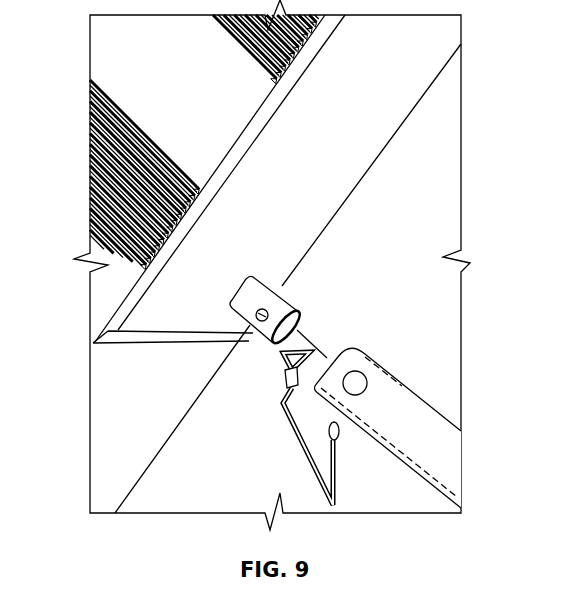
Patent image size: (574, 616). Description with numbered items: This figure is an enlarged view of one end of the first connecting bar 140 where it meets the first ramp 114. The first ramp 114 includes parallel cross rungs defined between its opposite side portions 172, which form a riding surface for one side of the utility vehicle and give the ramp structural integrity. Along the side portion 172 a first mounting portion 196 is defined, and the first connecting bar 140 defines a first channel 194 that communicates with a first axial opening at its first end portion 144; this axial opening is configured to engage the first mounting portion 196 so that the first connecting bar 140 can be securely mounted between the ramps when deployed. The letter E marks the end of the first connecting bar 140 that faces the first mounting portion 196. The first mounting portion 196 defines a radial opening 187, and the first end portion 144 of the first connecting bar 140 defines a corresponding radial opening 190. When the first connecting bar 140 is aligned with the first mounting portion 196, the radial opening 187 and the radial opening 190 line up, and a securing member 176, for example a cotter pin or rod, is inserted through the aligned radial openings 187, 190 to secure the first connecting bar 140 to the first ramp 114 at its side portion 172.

The first ramp 114 is at (105, 400).
The side portion 172 is at (347, 184).
The radial opening 187 is at (226, 346).
The first mounting portion 196 is at (245, 294).
The end E is at (290, 334).
The first connecting bar 140 is at (416, 405).
The first end portion 144 is at (402, 394).
The radial opening 190 is at (356, 382).
The first channel 194 is at (423, 478).
The securing member 176 is at (303, 448).